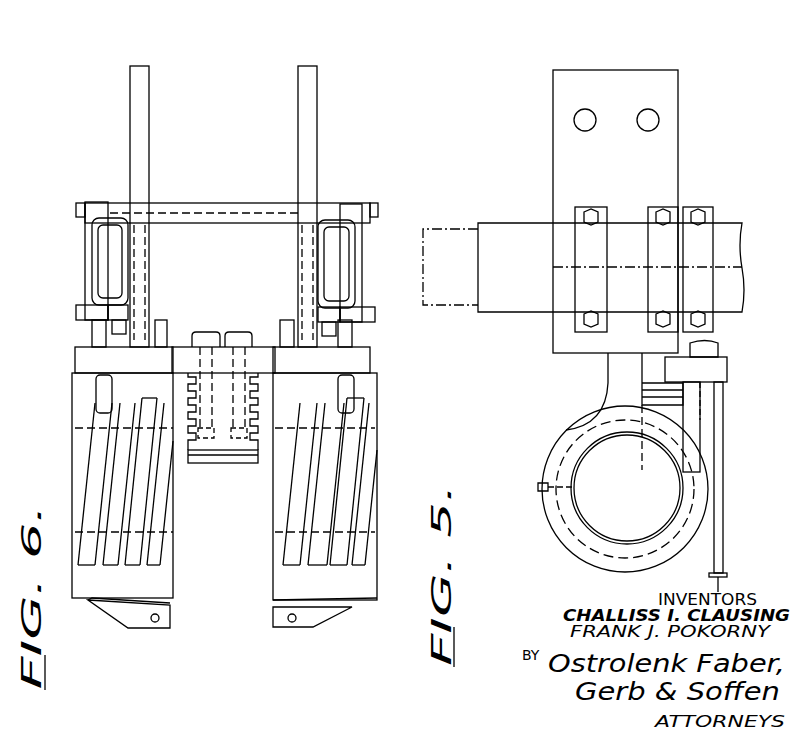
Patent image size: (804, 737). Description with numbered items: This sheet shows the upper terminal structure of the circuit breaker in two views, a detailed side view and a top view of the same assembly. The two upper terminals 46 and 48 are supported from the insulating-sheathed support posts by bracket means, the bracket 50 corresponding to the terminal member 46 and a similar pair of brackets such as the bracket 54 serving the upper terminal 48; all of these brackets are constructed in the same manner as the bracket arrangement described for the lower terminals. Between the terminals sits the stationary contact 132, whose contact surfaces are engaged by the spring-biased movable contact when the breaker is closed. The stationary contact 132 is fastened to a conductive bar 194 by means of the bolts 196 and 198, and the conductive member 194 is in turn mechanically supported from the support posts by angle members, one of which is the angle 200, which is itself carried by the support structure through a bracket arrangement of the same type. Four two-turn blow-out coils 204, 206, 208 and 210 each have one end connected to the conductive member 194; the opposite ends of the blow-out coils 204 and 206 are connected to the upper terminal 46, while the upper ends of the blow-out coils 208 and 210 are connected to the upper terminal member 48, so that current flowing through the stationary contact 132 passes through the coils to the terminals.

In FIG. 6, the upper terminal 46 is at (310, 72).
In FIG. 5, the upper terminal 46 is at (573, 80).
In FIG. 6, the upper terminal 48 is at (142, 72).
In FIG. 6, the bracket means 50 is at (340, 207).
In FIG. 6, the bracket 54 is at (92, 205).
In FIG. 6, the stationary contact 132 is at (224, 452).
In FIG. 5, the stationary contact 132 is at (652, 458).
In FIG. 6, the conductive bar 194 is at (270, 357).
In FIG. 6, the bolt 196 is at (206, 330).
In FIG. 6, the bolt 198 is at (239, 330).
In FIG. 5, the angle 200 is at (722, 358).
In FIG. 6, the blow-out coil 204 is at (365, 568).
In FIG. 6, the blow-out coil 206 is at (305, 570).
In FIG. 6, the blow-out coil 208 is at (145, 568).
In FIG. 6, the blow-out coil 210 is at (92, 568).